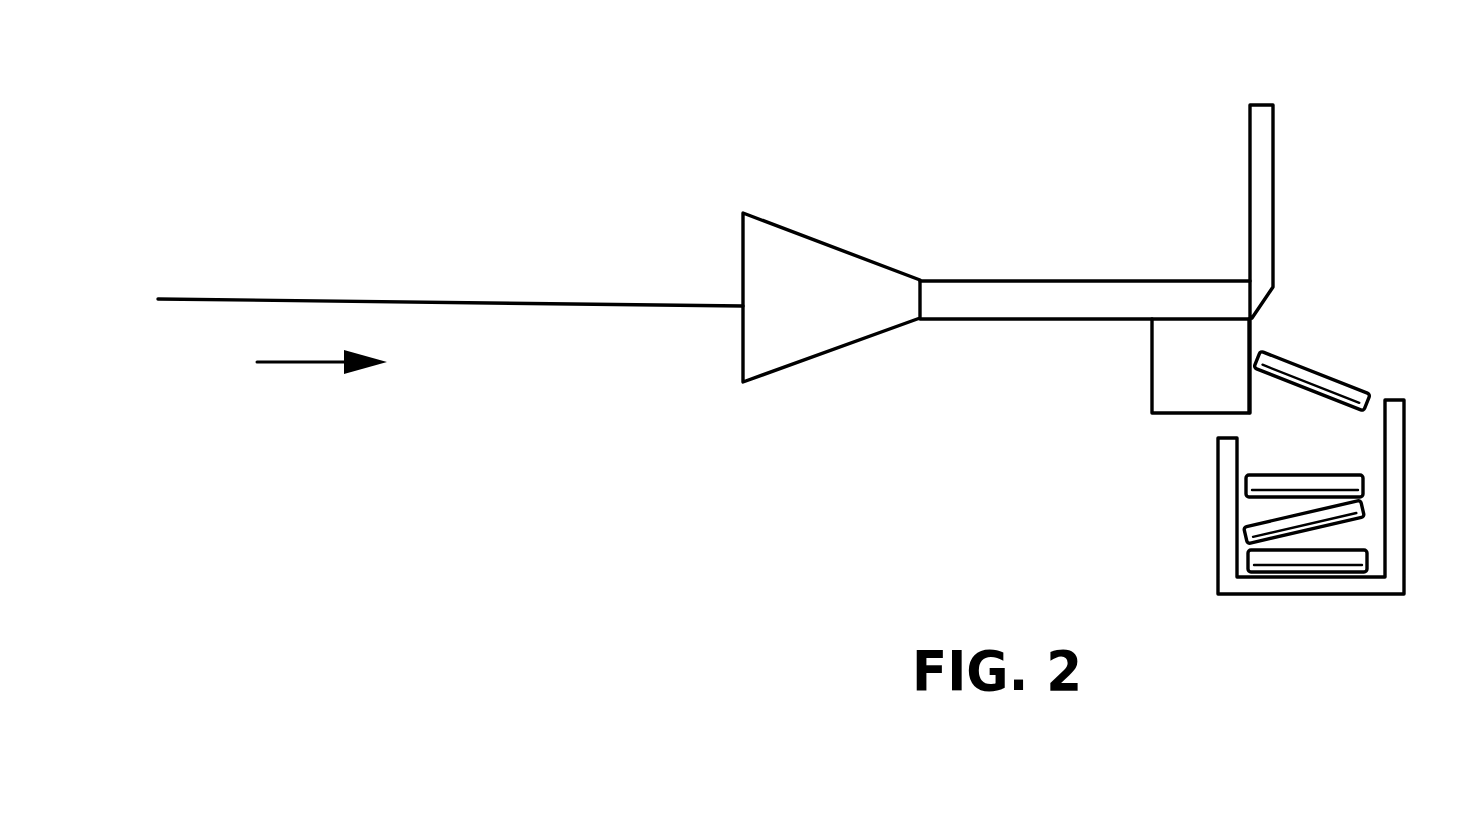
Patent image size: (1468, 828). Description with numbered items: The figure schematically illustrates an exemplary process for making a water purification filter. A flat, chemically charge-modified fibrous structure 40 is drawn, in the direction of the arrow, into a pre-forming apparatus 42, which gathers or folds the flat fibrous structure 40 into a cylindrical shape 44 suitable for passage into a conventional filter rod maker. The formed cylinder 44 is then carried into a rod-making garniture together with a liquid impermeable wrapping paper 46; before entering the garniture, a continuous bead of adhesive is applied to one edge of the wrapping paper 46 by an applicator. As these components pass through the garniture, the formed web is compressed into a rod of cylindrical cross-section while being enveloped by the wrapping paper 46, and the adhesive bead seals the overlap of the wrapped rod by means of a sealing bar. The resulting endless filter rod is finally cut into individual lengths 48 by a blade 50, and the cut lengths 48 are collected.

The chemically charge-modified fibrous structure 40 is at (276, 299).
The pre-forming apparatus 42 is at (820, 242).
The cylindrical shape 44 is at (1036, 280).
The liquid impermeable wrapping paper 46 is at (1163, 381).
The lengths 48 is at (1340, 379).
The blade 50 is at (1274, 155).